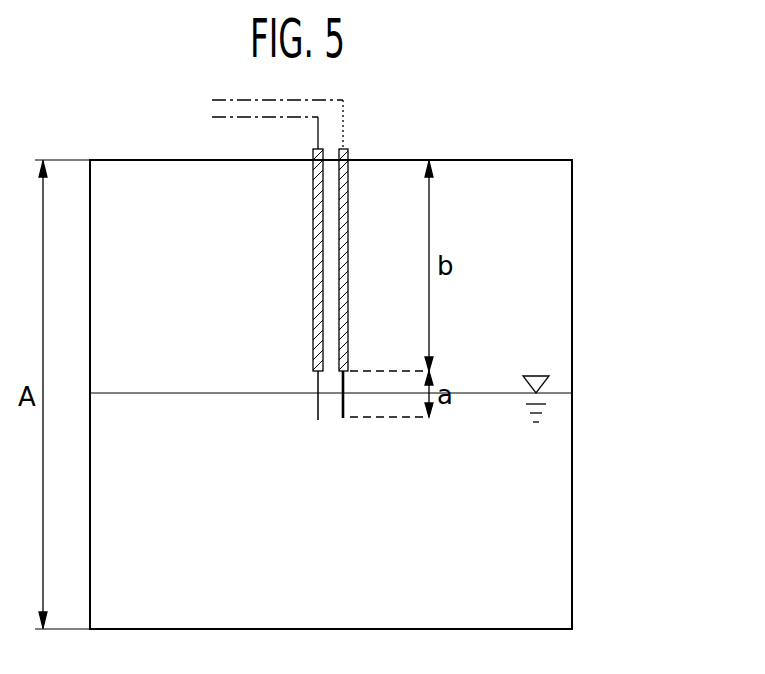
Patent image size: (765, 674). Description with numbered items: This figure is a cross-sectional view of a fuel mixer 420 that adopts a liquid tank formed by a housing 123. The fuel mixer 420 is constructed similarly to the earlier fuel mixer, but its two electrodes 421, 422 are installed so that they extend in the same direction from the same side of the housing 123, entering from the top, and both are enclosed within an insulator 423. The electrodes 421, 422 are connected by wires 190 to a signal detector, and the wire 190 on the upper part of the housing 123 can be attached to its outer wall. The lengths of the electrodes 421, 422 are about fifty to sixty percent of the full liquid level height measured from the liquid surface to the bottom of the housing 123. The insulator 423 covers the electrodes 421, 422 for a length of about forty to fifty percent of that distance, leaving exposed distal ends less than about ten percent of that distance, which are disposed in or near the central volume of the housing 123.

The housing 123 is at (572, 228).
The wire 190 is at (318, 131).
The fuel mixer 420 is at (421, 284).
The electrode 421 is at (318, 421).
The electrode 422 is at (343, 419).
The insulator 423 is at (313, 243).